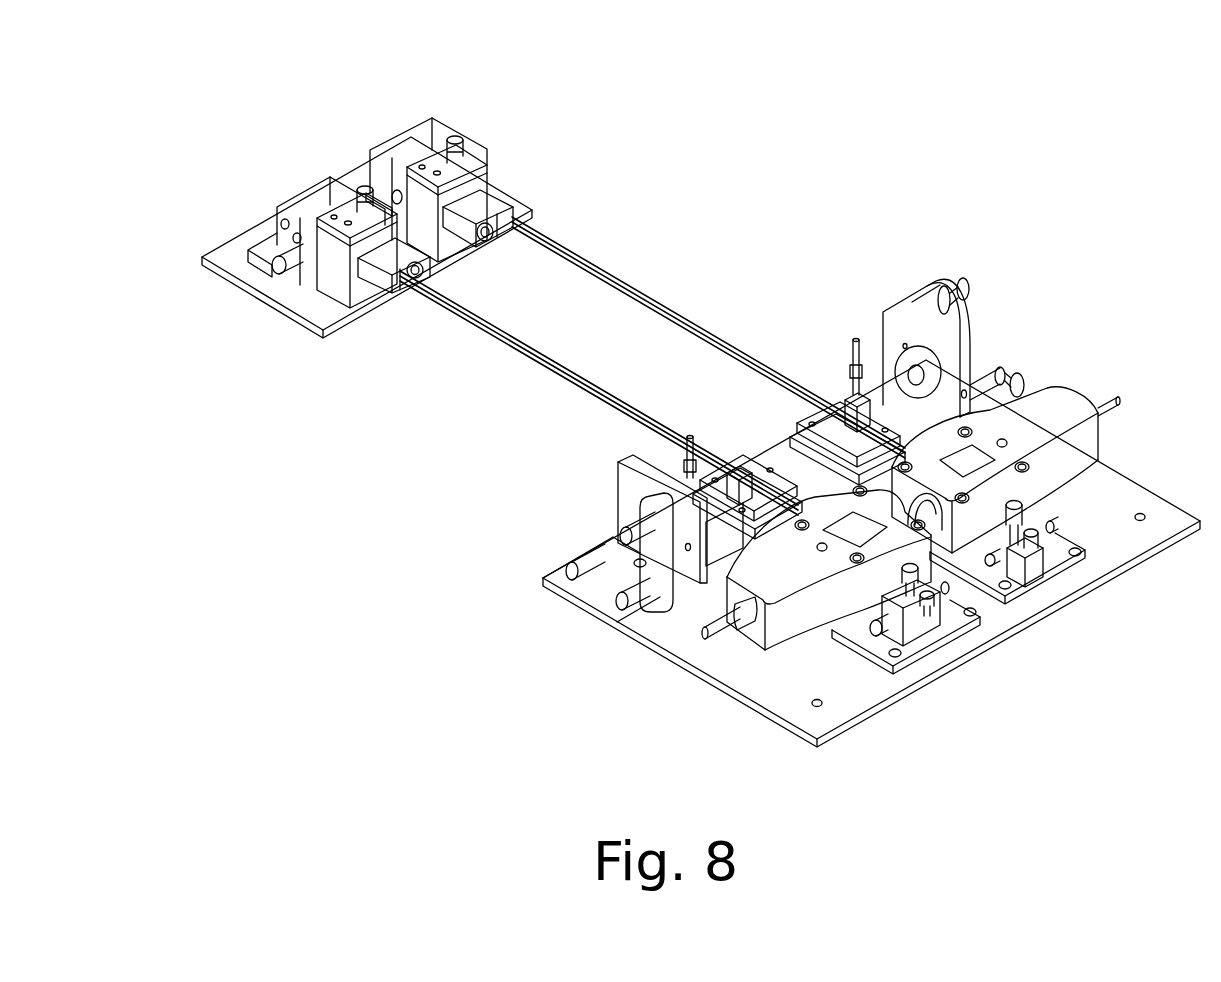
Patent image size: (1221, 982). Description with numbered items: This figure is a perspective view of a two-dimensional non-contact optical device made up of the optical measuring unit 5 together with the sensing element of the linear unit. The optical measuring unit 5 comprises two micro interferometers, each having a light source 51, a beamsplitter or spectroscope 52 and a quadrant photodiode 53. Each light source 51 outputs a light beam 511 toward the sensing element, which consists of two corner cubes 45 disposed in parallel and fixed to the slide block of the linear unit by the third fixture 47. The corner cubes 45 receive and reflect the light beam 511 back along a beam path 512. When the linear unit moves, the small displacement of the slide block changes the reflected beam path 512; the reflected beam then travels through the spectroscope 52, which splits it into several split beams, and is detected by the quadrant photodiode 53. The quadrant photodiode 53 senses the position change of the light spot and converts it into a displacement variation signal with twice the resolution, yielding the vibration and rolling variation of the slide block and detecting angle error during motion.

The optical measuring unit 5 is at (597, 686).
The third fixture 47 is at (410, 143).
The corner cube 45 is at (502, 186).
The light beam 511 is at (618, 296).
The beam path 512 is at (650, 300).
The beamsplitter 52 is at (845, 405).
The quadrant photodiode 53 is at (937, 352).
The light source 51 is at (1100, 450).